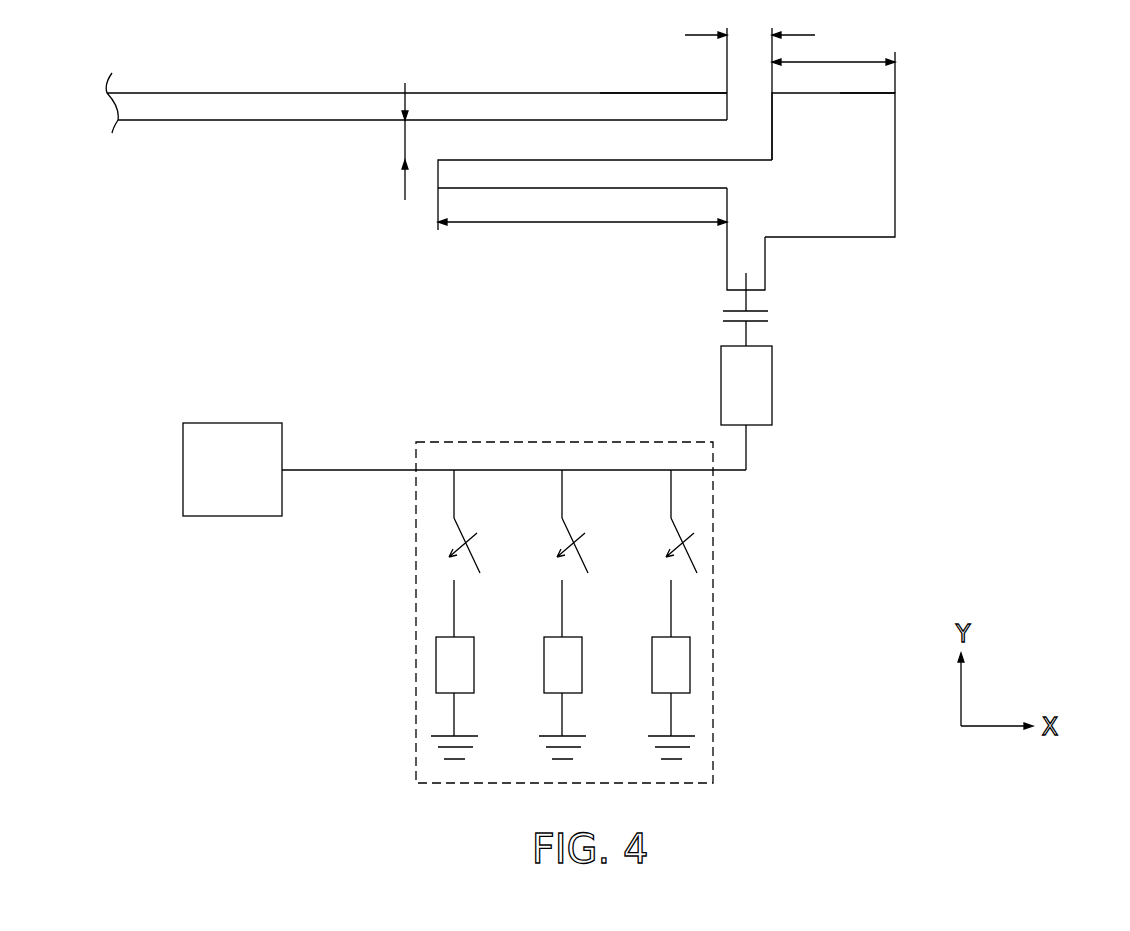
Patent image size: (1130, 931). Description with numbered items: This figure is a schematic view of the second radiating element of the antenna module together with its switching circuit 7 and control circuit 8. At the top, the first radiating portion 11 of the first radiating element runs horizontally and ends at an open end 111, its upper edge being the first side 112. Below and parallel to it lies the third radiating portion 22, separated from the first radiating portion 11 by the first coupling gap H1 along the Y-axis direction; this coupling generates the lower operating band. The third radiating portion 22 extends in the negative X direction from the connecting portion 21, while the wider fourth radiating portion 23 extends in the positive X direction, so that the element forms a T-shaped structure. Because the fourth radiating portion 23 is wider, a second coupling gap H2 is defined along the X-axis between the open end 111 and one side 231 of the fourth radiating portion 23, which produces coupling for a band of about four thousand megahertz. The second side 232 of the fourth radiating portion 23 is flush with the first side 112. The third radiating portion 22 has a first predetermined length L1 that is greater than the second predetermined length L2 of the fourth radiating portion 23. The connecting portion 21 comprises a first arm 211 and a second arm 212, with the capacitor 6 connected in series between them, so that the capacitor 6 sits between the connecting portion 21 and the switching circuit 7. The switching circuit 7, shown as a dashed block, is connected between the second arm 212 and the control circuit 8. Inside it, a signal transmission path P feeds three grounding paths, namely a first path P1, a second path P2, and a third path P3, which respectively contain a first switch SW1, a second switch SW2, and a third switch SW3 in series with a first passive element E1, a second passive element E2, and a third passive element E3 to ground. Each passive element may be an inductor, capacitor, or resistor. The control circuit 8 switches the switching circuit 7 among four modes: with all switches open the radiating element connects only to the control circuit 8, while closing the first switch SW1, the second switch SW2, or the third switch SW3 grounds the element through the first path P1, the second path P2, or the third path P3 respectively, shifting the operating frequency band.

The first radiating portion 11 is at (490, 105).
The open end 111 is at (727, 101).
The first side 112 is at (654, 88).
The third radiating portion 22 is at (530, 165).
The fourth radiating portion 23 is at (880, 160).
The one side 231 is at (772, 101).
The second side 232 is at (870, 90).
The connecting portion 21 is at (865, 349).
The first arm 211 is at (756, 278).
The second arm 212 is at (765, 385).
The capacitor 6 is at (714, 316).
The switching circuit 7 is at (540, 438).
The control circuit 8 is at (168, 475).
The signal transmission path P is at (637, 468).
The first path P1 is at (675, 490).
The second path P2 is at (566, 490).
The third path P3 is at (458, 490).
The first switch SW1 is at (709, 571).
The second switch SW2 is at (600, 571).
The third switch SW3 is at (492, 571).
The first passive element E1 is at (682, 664).
The second passive element E2 is at (553, 664).
The third passive element E3 is at (445, 667).
The first coupling gap H1 is at (387, 141).
The second coupling gap H2 is at (750, 48).
The first predetermined length L1 is at (582, 209).
The second predetermined length L2 is at (833, 62).